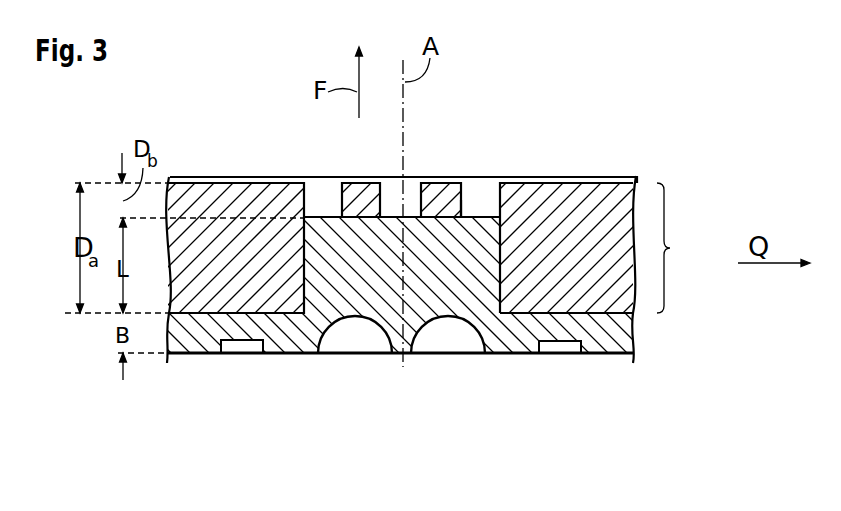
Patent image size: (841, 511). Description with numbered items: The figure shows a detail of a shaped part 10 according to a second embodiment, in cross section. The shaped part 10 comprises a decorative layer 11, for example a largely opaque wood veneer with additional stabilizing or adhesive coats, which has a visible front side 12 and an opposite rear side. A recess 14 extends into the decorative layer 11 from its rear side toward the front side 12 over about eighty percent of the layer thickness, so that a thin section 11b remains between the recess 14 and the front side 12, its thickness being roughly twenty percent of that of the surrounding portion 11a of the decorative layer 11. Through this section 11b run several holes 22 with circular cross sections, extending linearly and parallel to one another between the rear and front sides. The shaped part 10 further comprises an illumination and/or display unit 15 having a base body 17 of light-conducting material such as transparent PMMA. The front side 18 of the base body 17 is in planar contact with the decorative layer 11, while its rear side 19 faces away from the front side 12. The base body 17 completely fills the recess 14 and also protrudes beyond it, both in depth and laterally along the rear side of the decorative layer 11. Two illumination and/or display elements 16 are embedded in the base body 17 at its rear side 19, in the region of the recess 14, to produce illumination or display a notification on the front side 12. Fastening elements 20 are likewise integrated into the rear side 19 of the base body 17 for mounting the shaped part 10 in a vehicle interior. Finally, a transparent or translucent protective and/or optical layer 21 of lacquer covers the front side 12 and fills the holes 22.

The shaped part 10 is at (613, 108).
The decorative layer 11 is at (680, 248).
The portion of the decorative layer 11a is at (243, 257).
The section of the decorative layer 11b is at (360, 200).
The front side 12 is at (620, 181).
The recess 14 is at (452, 212).
The illumination and/or display unit 15 is at (315, 390).
The illumination and/or display elements 16 is at (433, 338).
The base body 17 is at (442, 268).
The front side of the base body 18 is at (202, 292).
The rear side of the base body 19 is at (608, 357).
The fastening elements 20 is at (245, 345).
The protective and/or optical layer 21 is at (540, 178).
The holes 22 is at (318, 200).